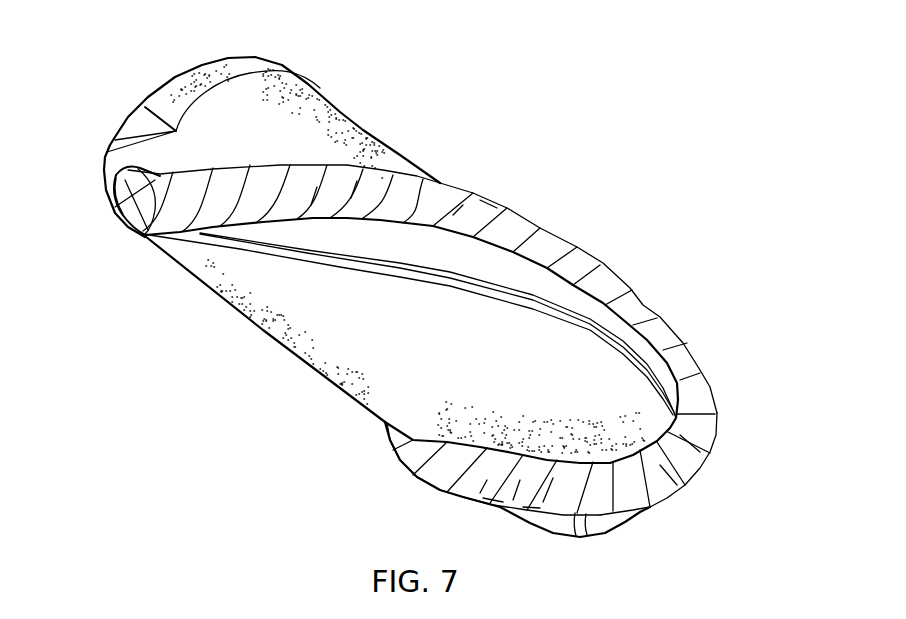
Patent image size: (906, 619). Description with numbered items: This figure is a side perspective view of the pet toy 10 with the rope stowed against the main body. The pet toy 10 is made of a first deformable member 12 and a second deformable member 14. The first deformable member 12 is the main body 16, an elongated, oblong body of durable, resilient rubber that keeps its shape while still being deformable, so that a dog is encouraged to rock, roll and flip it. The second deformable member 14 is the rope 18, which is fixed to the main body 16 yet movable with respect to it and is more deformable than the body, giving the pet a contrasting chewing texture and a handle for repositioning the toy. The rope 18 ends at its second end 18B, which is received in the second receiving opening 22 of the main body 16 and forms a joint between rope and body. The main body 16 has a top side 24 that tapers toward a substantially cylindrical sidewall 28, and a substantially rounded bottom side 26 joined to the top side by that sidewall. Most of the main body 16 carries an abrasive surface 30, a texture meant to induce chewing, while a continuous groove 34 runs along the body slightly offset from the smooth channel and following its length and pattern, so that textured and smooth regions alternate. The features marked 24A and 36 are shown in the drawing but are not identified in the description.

The pet toy 10 is at (550, 138).
The first deformable member 12 is at (365, 122).
The second deformable member 14 is at (690, 354).
The main body 16 is at (400, 158).
The rope 18 is at (719, 425).
The second end 18B is at (145, 237).
The second receiving opening 22 is at (118, 225).
The top side 24 is at (160, 98).
The inner edge curve 24A is at (205, 88).
The bottom side 26 is at (650, 507).
The cylindrical sidewall 28 is at (330, 381).
The abrasive surface 30 is at (300, 100).
The continuous groove 34 is at (517, 306).
The rib 36 is at (513, 276).